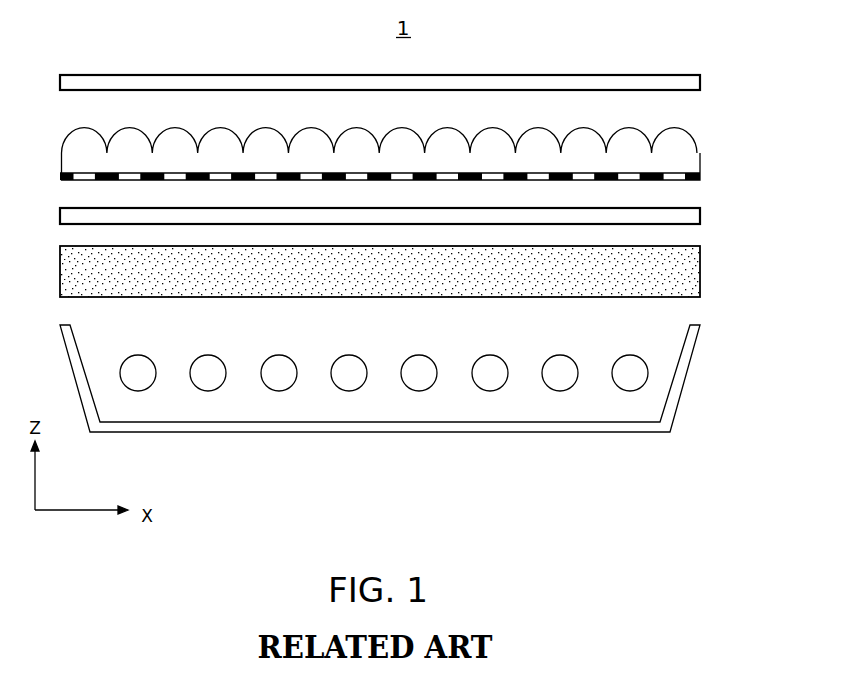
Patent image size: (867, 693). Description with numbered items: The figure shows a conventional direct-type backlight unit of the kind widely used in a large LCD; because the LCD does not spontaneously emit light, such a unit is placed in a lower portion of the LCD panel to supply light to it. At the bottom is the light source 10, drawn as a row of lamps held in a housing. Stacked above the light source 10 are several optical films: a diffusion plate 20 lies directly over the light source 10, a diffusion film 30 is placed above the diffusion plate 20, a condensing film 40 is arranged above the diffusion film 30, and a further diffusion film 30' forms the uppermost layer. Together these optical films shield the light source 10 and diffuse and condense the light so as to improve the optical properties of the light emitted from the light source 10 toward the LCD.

The light source 10 is at (648, 373).
The diffusion plate 20 is at (700, 272).
The diffusion film 30 is at (420, 203).
The diffusion film 30' is at (424, 68).
The condensing film 40 is at (700, 152).